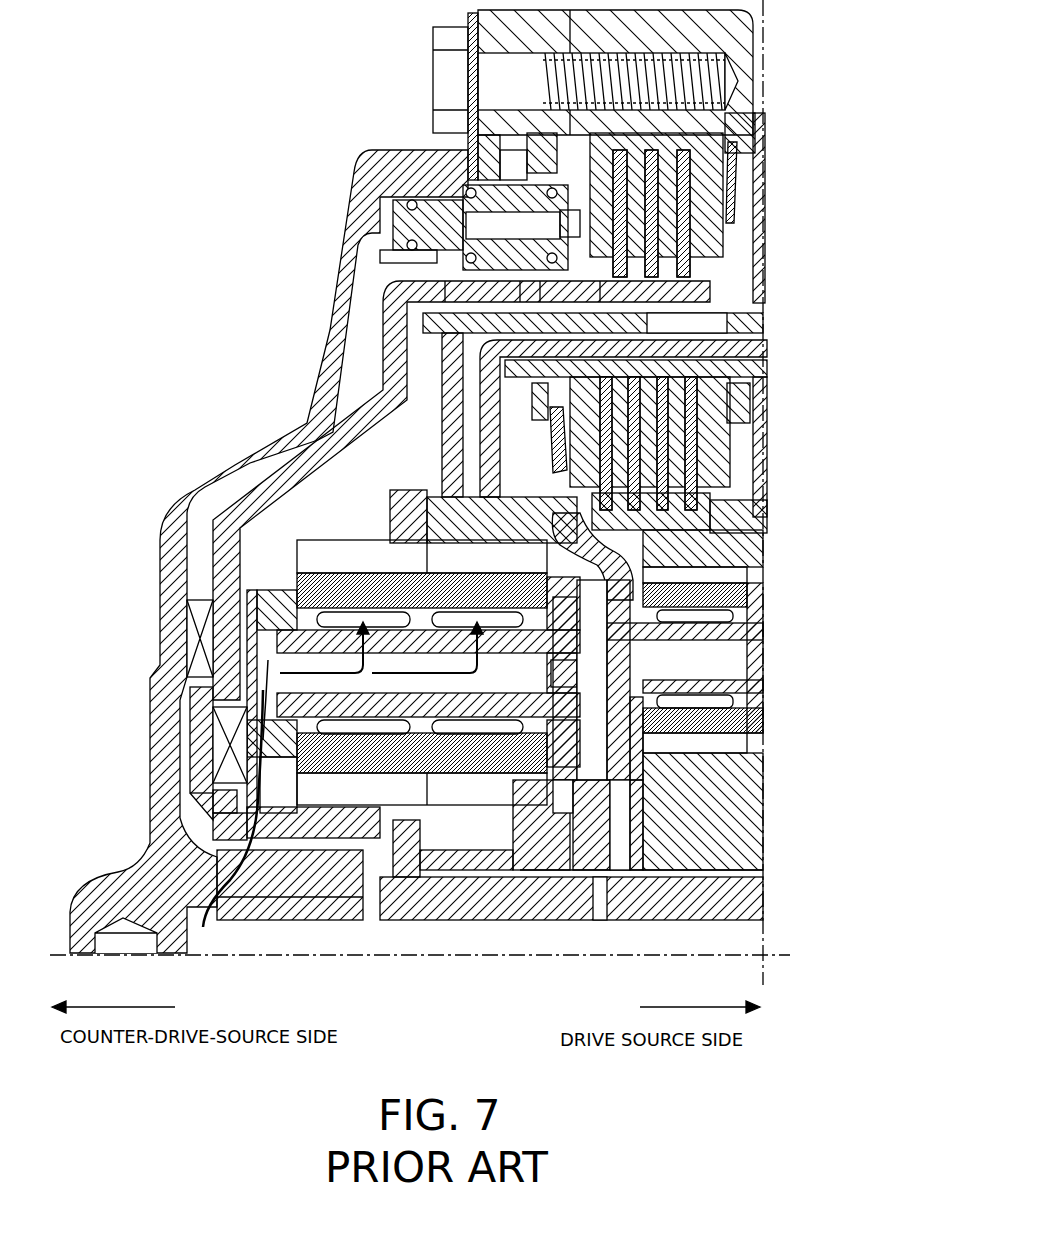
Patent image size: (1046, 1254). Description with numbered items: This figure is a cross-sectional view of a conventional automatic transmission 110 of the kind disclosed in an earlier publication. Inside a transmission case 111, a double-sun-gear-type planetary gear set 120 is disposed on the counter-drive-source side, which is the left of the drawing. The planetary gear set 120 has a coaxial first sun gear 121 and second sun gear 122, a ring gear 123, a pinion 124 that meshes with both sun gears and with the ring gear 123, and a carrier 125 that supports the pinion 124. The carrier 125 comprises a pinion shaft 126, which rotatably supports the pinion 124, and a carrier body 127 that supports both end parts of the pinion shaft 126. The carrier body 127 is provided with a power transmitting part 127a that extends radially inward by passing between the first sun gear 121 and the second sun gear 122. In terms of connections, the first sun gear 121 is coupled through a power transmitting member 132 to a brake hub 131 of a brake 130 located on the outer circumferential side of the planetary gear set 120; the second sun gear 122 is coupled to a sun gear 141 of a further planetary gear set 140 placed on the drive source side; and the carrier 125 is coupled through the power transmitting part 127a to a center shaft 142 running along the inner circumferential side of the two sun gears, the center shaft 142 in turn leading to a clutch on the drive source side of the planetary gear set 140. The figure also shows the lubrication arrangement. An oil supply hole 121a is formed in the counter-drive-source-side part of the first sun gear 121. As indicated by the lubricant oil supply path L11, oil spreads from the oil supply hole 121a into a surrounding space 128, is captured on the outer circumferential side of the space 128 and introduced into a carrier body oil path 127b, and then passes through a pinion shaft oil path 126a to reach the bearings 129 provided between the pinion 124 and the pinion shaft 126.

The automatic transmission 110 is at (245, 170).
The transmission case 111 is at (235, 465).
The planetary gear set 120 is at (287, 569).
The first sun gear 121 is at (337, 925).
The oil supply hole 121a is at (240, 828).
The second sun gear 122 is at (487, 875).
The ring gear 123 is at (513, 510).
The pinion 124 is at (352, 575).
The carrier 125 is at (560, 593).
The pinion shaft 126 is at (700, 620).
The pinion shaft oil path 126a is at (560, 668).
The carrier body 127 is at (247, 617).
The power transmitting part 127a is at (430, 870).
The carrier body oil path 127b is at (240, 737).
The space 128 is at (238, 790).
The bearings 129 is at (552, 545).
The brake 130 is at (743, 209).
The brake hub 131 is at (755, 300).
The power transmitting member 132 is at (383, 368).
The planetary gear set 140 is at (763, 715).
The sun gear 141 is at (750, 793).
The center shaft 142 is at (750, 900).
The lubricant oil supply path L11 is at (264, 691).